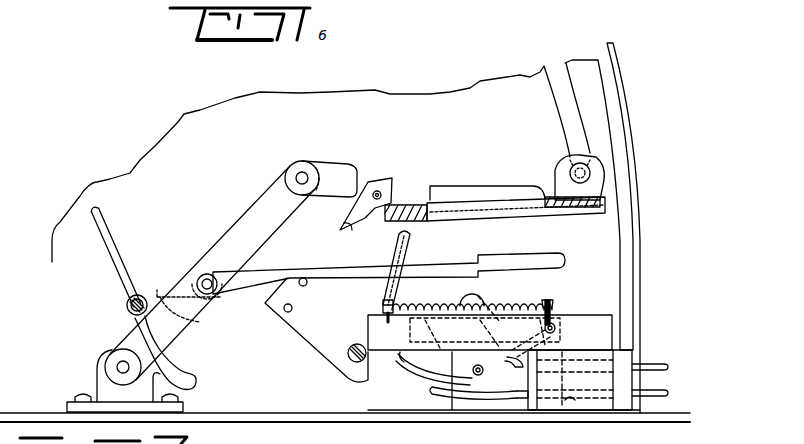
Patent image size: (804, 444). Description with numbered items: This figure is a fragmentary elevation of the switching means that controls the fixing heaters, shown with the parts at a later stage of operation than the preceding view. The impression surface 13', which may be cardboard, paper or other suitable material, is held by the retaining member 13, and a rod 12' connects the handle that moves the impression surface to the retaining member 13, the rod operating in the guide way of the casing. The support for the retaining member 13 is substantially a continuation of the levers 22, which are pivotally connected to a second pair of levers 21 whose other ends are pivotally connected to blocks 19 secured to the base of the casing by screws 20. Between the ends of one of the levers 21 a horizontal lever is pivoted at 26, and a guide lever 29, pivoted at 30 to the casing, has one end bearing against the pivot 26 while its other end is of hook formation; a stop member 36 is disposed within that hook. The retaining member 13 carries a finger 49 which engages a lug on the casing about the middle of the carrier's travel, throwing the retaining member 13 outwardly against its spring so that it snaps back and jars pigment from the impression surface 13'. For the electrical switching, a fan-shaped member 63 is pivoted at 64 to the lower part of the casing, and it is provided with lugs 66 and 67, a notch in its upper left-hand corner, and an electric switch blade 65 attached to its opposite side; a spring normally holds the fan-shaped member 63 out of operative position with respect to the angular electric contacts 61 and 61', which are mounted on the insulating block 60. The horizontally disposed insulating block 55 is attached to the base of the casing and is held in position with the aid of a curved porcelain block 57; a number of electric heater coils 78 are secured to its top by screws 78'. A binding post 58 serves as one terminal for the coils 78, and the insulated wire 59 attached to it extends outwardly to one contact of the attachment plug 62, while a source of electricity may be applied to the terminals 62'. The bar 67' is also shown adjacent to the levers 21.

The rod 12' is at (565, 161).
The retaining member 13 is at (516, 213).
The impression surface 13' is at (385, 192).
The levers 22 is at (348, 178).
The levers 21 is at (238, 223).
The finger 49 is at (344, 223).
The electric switch blade 65 is at (412, 239).
The bar 67' is at (389, 268).
The guide lever 29 is at (117, 274).
The pivot 30 is at (128, 306).
The pivot 26 is at (204, 275).
The stop member 36 is at (196, 315).
The blocks 19 is at (97, 376).
The screws 20 is at (77, 397).
The fan-shaped member 63 is at (306, 348).
The lug 66 is at (307, 285).
The lug 67 is at (307, 313).
The pivot 64 is at (356, 363).
The insulating block 55 is at (607, 315).
The binding post 58 is at (388, 302).
The electric contact 61' is at (486, 303).
The electric heater coils 78 is at (534, 303).
The screws 78' is at (562, 296).
The electric contact 61 is at (439, 369).
The curved porcelain block 57 is at (430, 379).
The insulating block 60 is at (460, 407).
The insulated wire 59 is at (510, 417).
The attachment plug 62 is at (593, 397).
The terminals 62' is at (654, 369).